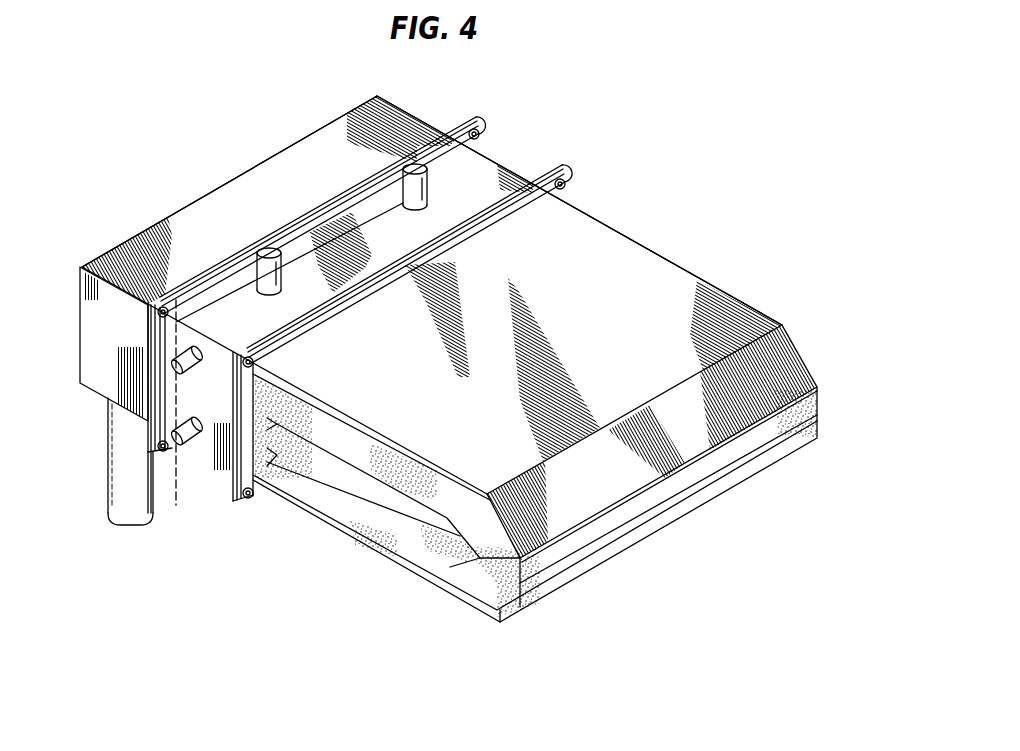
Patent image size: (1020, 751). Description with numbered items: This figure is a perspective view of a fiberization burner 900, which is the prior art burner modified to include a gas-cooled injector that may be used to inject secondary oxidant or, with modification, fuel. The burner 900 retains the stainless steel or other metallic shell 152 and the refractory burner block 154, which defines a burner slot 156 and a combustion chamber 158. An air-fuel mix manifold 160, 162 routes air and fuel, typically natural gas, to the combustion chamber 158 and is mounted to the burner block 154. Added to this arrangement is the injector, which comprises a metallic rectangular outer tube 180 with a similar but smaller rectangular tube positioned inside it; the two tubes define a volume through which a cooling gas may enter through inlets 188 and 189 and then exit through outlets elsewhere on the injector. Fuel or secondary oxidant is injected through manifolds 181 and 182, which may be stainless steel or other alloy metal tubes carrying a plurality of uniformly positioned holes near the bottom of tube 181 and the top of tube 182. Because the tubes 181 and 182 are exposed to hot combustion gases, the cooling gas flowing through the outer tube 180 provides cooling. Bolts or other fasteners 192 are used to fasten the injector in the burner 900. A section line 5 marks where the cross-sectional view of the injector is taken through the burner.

The section 5- 5 is at (103, 257).
The metallic shell 152 is at (787, 365).
The refractory burner block 154 is at (820, 403).
The burner slot 156 is at (817, 425).
The combustion chamber 158 is at (396, 512).
The air-fuel mix manifold 160 is at (122, 490).
The air-fuel mix manifold 162 is at (140, 232).
The rectangular outer tube 180 is at (507, 170).
The manifold 181 is at (183, 355).
The manifold 182 is at (193, 440).
The inlet 188 is at (400, 185).
The inlet 189 is at (265, 270).
The bolts or other fasteners 192 is at (263, 497).
The burner 900 is at (683, 198).